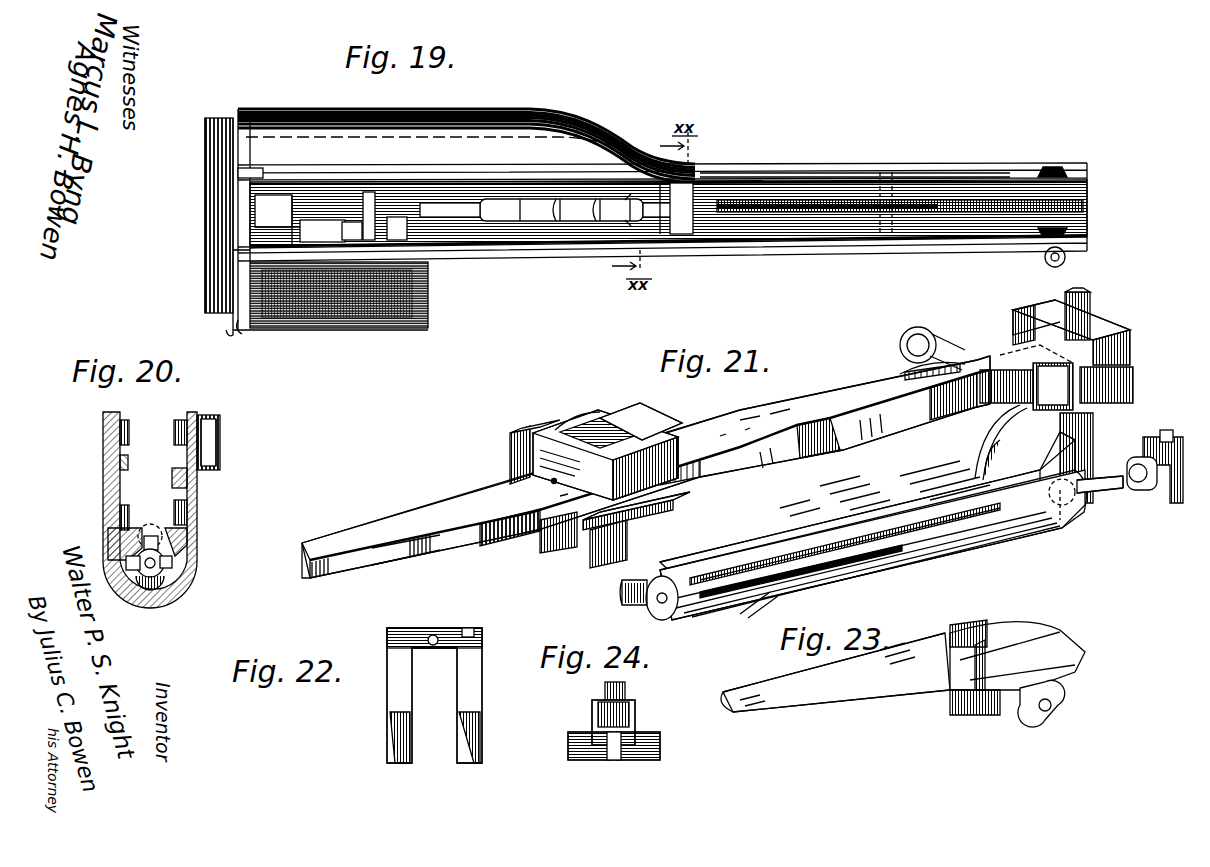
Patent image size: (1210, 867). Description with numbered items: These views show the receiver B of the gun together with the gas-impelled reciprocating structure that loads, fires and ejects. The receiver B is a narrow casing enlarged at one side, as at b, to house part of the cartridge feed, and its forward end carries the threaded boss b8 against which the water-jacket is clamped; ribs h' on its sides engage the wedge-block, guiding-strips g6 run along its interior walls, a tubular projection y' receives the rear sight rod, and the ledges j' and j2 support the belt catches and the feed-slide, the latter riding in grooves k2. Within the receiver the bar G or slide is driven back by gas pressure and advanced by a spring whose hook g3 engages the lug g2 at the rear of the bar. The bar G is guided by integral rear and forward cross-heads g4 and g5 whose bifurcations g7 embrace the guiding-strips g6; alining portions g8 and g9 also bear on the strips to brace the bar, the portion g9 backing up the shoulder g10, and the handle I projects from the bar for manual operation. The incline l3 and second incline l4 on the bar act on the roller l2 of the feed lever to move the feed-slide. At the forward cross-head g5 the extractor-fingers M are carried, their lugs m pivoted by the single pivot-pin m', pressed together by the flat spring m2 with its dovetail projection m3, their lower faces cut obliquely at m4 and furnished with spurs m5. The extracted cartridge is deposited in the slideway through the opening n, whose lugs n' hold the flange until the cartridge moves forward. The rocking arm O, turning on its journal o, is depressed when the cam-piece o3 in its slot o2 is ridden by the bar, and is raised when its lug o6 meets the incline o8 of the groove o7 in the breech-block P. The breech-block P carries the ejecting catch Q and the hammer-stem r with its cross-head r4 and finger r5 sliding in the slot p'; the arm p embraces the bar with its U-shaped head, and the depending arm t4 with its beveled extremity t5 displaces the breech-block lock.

In FIG. 19, the expanded side portion b is at (466, 219).
In FIG. 19, the threaded boss b8 is at (205, 160).
In FIG. 19, the receiver B is at (662, 187).
In FIG. 20, the receiver B is at (86, 463).
In FIG. 19, the grooves k2 is at (350, 240).
In FIG. 19, the opening n is at (531, 241).
In FIG. 20, the opening n is at (189, 521).
In FIG. 19, the lugs n' is at (632, 249).
In FIG. 20, the lugs n' is at (152, 534).
In FIG. 19, the antifriction-roller l2 is at (707, 163).
In FIG. 20, the antifriction-roller l2 is at (103, 414).
In FIG. 21, the antifriction-roller l2 is at (1036, 377).
In FIG. 19, the guiding-strips g6 is at (752, 178).
In FIG. 20, the guiding-strips g6 is at (172, 476).
In FIG. 19, the slot p' is at (900, 245).
In FIG. 19, the ribs h' is at (1034, 200).
In FIG. 20, the ribs h' is at (153, 474).
In FIG. 19, the tubular projection y' is at (1077, 258).
In FIG. 19, the ledge j' is at (348, 290).
In FIG. 19, the horizontal ledge j2 is at (233, 335).
In FIG. 20, the breech-block P is at (178, 590).
In FIG. 21, the breech-block P is at (873, 545).
In FIG. 20, the hook g3 is at (172, 564).
In FIG. 21, the hook g3 is at (775, 592).
In FIG. 20, the catch Q is at (140, 554).
In FIG. 21, the catch Q is at (628, 596).
In FIG. 21, the incline or cam-surface l3 is at (436, 503).
In FIG. 21, the bar or slide G is at (758, 425).
In FIG. 21, the alining portion g8 is at (490, 533).
In FIG. 21, the second incline l4 is at (760, 406).
In FIG. 21, the rearward alining portion g9 is at (872, 448).
In FIG. 21, the bifurcations g7 is at (510, 468).
In FIG. 21, the extractor-fingers M is at (606, 562).
In FIG. 22, the extractor-fingers M is at (466, 688).
In FIG. 21, the flat spring m2 is at (572, 440).
In FIG. 22, the flat spring m2 is at (462, 632).
In FIG. 21, the forward guide or cross-head g5 is at (634, 430).
In FIG. 21, the pivot-pin m' is at (518, 492).
In FIG. 22, the pivot-pin m' is at (469, 639).
In FIG. 21, the spurs or shoulders m5 is at (632, 516).
In FIG. 21, the hand-pull or handle I is at (914, 327).
In FIG. 21, the shoulder g10 is at (923, 380).
In FIG. 21, the rear guide or cross-head g4 is at (1096, 364).
In FIG. 21, the lug g2 is at (1082, 312).
In FIG. 21, the arm p is at (985, 442).
In FIG. 21, the depending arm t4 is at (1080, 452).
In FIG. 21, the cam-surface or incline o8 is at (830, 530).
In FIG. 21, the groove o7 is at (752, 550).
In FIG. 21, the hammer-stem r is at (1106, 490).
In FIG. 21, the cross-head r4 is at (1166, 503).
In FIG. 21, the finger r5 is at (1166, 430).
In FIG. 21, the beveled extremity t5 is at (1090, 500).
In FIG. 22, the lugs m is at (427, 611).
In FIG. 22, the dovetail projection m3 is at (475, 636).
In FIG. 22, the oblique faces m4 is at (440, 740).
In FIG. 24, the rocking arm or depressor O is at (600, 713).
In FIG. 23, the rocking arm or depressor O is at (894, 682).
In FIG. 24, the tubular journal o is at (575, 760).
In FIG. 23, the tubular journal o is at (1028, 715).
In FIG. 24, the lug o6 is at (614, 760).
In FIG. 23, the lug o6 is at (965, 715).
In FIG. 23, the slot or recess o2 is at (1025, 628).
In FIG. 23, the cam-piece or wiper o3 is at (978, 628).